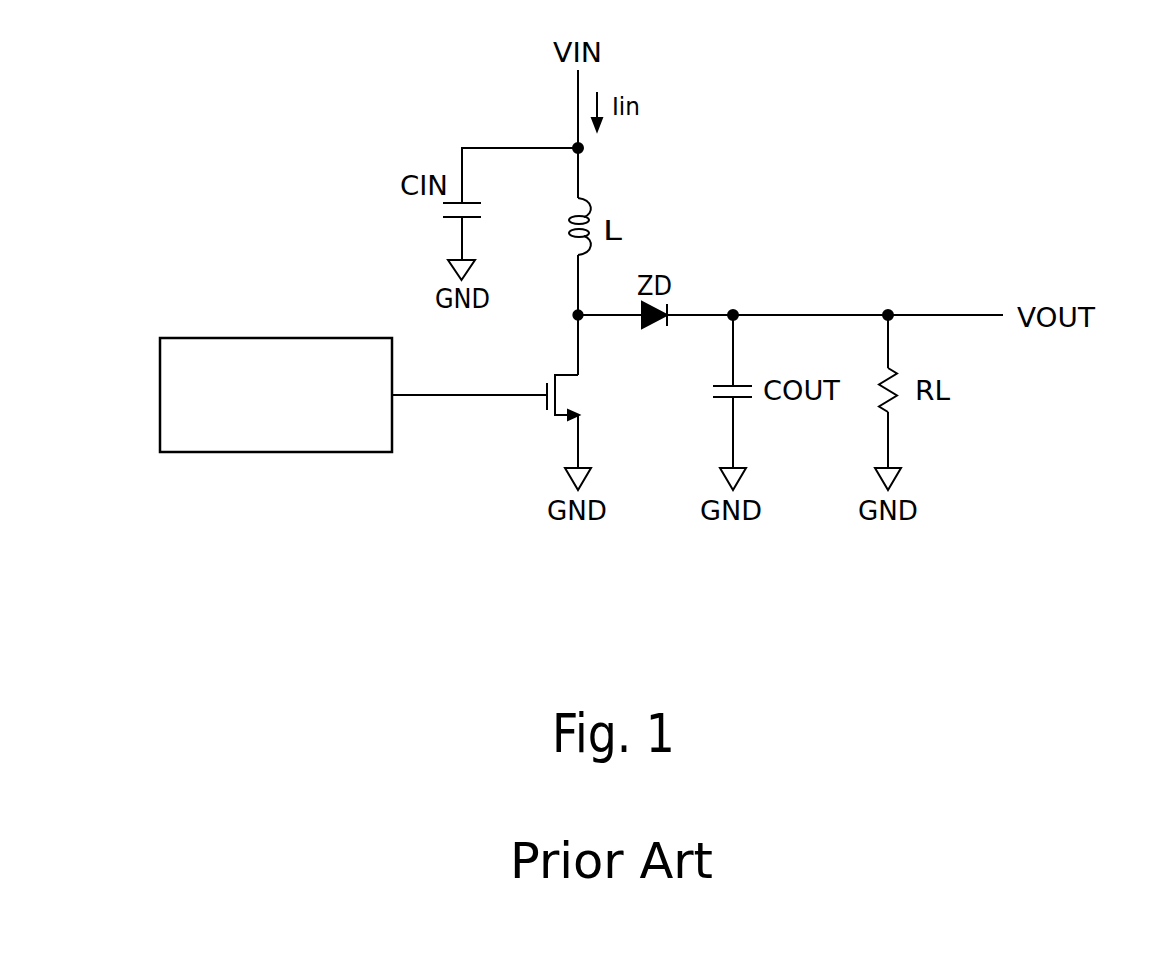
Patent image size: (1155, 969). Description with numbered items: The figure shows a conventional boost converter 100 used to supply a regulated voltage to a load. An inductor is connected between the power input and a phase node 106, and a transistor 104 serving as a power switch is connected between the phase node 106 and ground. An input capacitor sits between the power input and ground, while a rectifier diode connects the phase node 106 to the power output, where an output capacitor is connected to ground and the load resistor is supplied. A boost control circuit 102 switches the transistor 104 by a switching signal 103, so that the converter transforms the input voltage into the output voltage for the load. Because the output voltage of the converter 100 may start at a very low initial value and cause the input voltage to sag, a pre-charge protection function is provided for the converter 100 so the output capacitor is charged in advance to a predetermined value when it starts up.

The boost converter 100 is at (1016, 113).
The boost control circuit 102 is at (275, 338).
The switching signal 103 is at (477, 397).
The transistor 104 is at (592, 397).
The phase node 106 is at (572, 316).